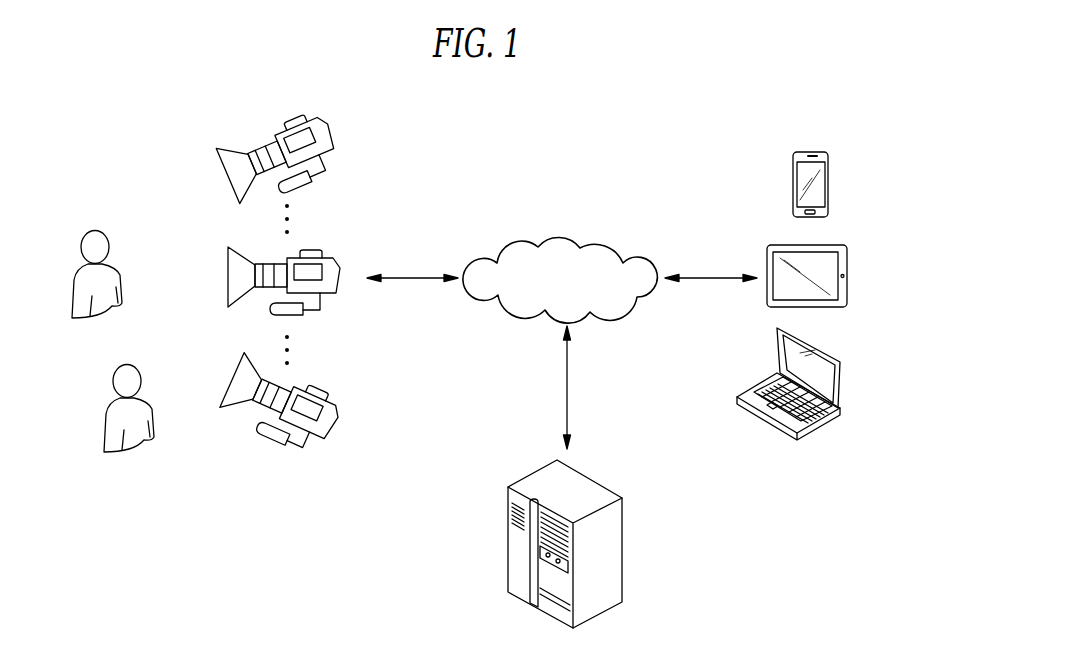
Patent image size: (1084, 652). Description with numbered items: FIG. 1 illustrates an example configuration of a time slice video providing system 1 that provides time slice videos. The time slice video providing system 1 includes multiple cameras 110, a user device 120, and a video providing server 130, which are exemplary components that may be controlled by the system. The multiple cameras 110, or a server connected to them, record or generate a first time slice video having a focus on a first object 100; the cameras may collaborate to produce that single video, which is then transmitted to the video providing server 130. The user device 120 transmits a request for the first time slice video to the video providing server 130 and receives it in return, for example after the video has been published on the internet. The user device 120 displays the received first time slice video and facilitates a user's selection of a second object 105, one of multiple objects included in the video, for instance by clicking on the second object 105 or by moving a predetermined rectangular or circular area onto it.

The time slice video providing system 1 is at (548, 176).
The first object 100 is at (103, 231).
The second object 105 is at (138, 365).
The multiple cameras 110 is at (341, 436).
The user device 120 is at (866, 430).
The video providing server 130 is at (590, 477).